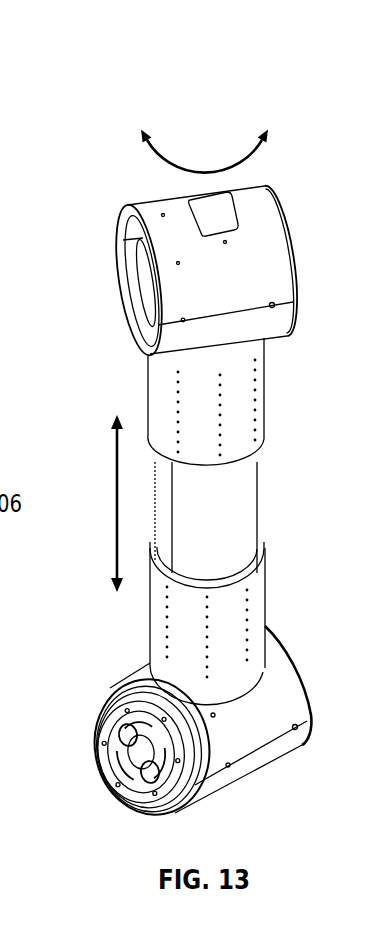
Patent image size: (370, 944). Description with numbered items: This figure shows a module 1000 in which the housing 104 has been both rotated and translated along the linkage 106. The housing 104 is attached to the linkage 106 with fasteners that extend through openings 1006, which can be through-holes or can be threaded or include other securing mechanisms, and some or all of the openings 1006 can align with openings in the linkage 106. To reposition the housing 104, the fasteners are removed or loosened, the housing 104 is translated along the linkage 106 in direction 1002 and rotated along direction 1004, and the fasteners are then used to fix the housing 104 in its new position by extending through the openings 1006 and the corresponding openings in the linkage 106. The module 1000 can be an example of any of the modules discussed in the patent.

The module 1000 is at (110, 82).
The direction 1002 is at (115, 468).
The direction 1004 is at (147, 163).
The openings 1006 is at (180, 402).
The housing 104 is at (125, 285).
The linkage 106 is at (258, 505).